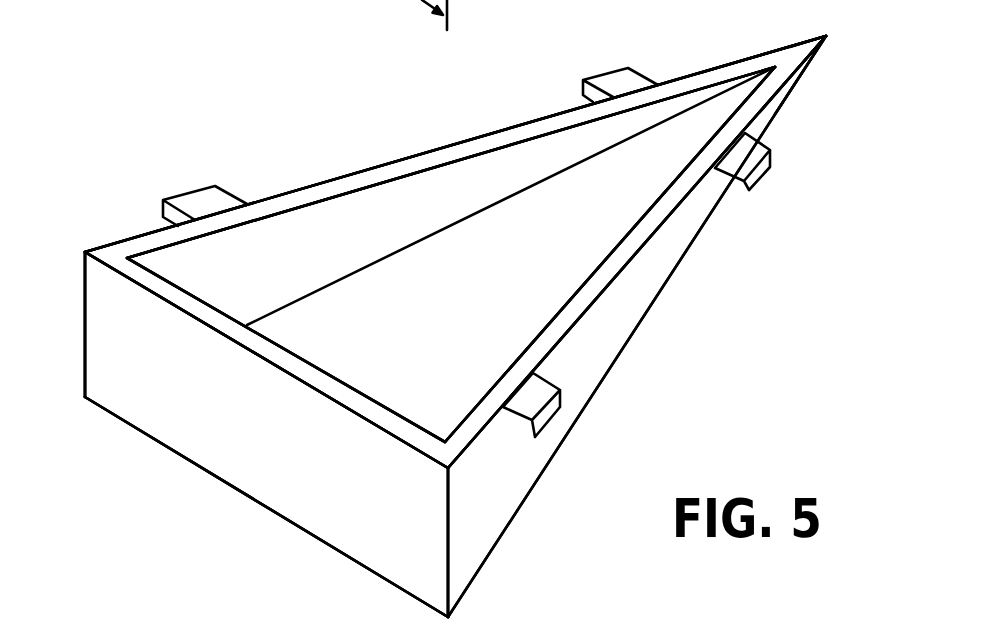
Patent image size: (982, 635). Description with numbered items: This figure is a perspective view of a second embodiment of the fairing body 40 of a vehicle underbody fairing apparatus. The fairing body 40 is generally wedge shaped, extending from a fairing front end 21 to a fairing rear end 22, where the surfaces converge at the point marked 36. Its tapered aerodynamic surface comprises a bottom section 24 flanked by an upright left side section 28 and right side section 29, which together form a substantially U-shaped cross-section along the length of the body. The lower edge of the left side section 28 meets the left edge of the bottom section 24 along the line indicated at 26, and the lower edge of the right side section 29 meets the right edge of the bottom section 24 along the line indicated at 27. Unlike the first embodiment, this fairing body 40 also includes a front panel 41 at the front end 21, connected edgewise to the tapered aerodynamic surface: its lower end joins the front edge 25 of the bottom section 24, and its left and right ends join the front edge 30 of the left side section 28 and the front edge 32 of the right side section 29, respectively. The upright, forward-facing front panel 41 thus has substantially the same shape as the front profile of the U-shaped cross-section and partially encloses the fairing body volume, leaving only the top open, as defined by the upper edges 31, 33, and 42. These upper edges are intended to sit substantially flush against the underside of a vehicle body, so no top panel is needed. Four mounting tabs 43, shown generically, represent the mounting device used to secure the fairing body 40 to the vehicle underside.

The fairing front end 21 is at (200, 504).
The fairing rear end 22 is at (786, 30).
The bottom section 24 is at (515, 292).
The front edge of the bottom section 25 is at (384, 579).
The intersection of the left side section lower edge and bottom section left edge 26 is at (532, 498).
The intersection of the right side section lower edge and bottom section right edge 27 is at (333, 283).
The left side section 28 is at (603, 373).
The right side section 29 is at (378, 235).
The front edge of the left side section 30 is at (449, 546).
The upper edge of the left side section 31 is at (640, 230).
The front edge of the right side section 32 is at (83, 318).
The upper edge of the right side section 33 is at (323, 193).
The apex 36 is at (826, 37).
The fairing body 40 is at (220, 115).
The front panel 41 is at (262, 425).
The upper edge of the front panel 42 is at (345, 396).
The mounting tabs 43 is at (208, 192).